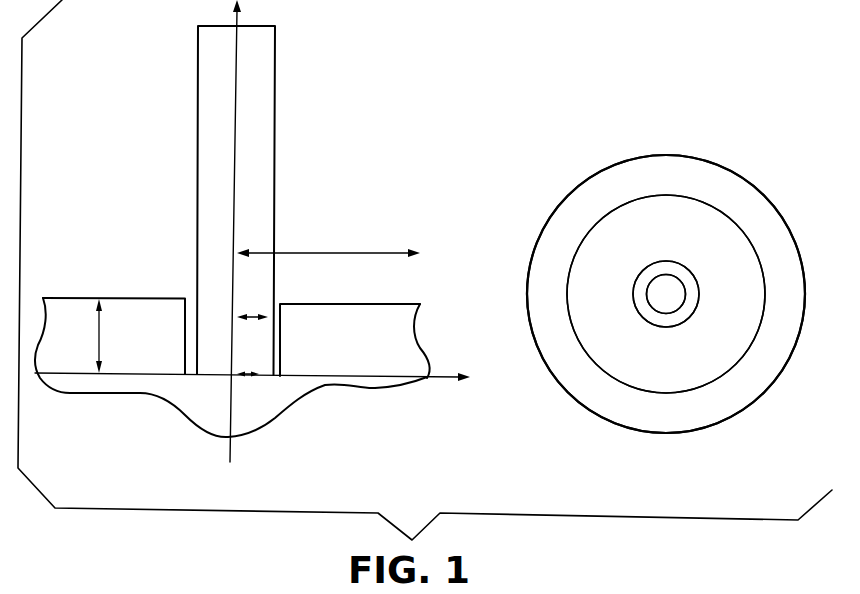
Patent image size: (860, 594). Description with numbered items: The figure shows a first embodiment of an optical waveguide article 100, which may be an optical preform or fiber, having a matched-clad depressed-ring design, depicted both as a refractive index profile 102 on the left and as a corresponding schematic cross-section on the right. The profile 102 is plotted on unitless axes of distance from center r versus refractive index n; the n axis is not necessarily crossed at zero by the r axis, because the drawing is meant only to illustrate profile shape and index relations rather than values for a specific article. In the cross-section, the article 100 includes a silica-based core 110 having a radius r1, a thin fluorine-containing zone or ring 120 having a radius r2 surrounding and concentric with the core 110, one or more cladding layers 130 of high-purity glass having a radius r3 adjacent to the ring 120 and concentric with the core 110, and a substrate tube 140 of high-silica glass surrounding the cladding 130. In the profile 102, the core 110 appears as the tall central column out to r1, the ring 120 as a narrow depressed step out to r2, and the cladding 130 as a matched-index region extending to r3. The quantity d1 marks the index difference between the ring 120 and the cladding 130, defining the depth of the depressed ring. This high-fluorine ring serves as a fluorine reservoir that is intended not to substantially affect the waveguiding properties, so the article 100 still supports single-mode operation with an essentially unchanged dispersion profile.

The optical waveguide article 100 is at (553, 413).
The refractive index profile 102 is at (330, 180).
The core 110 is at (663, 302).
The fluorine-containing zone or ring 120 is at (672, 318).
The cladding layer 130 is at (705, 367).
The substrate tube 140 is at (752, 392).
The refractive index axis n is at (237, 50).
The distance from center axis r is at (440, 376).
The core radius r1 is at (251, 379).
The ring radius r2 is at (259, 322).
The cladding radius r3 is at (337, 256).
The depressed index difference d1 is at (97, 337).